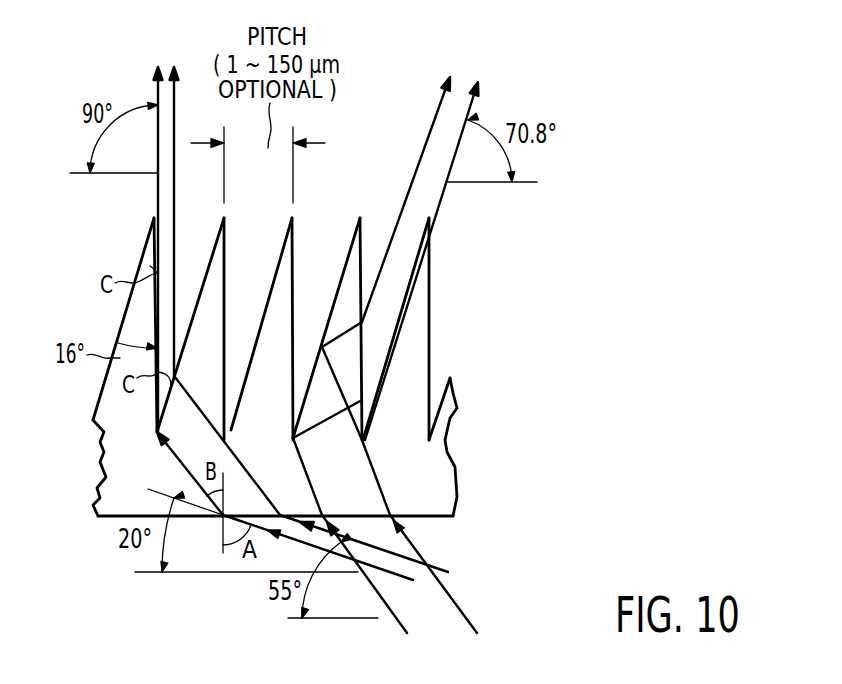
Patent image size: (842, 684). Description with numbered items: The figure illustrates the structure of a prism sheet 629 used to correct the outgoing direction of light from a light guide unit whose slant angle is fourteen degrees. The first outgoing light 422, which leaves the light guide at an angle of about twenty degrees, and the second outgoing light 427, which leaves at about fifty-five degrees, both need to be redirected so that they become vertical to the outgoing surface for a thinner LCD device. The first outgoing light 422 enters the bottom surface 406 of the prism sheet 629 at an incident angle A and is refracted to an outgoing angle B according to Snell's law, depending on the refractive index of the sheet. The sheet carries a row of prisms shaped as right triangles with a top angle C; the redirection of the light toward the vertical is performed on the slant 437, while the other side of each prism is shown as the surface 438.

The prism sheet 629 is at (518, 53).
The inclined prism surface 437 is at (345, 258).
The vertical prism surface 438 is at (362, 233).
The light guide / base 406 is at (108, 517).
The first light ray 422 is at (300, 545).
The second light ray 427 is at (455, 597).